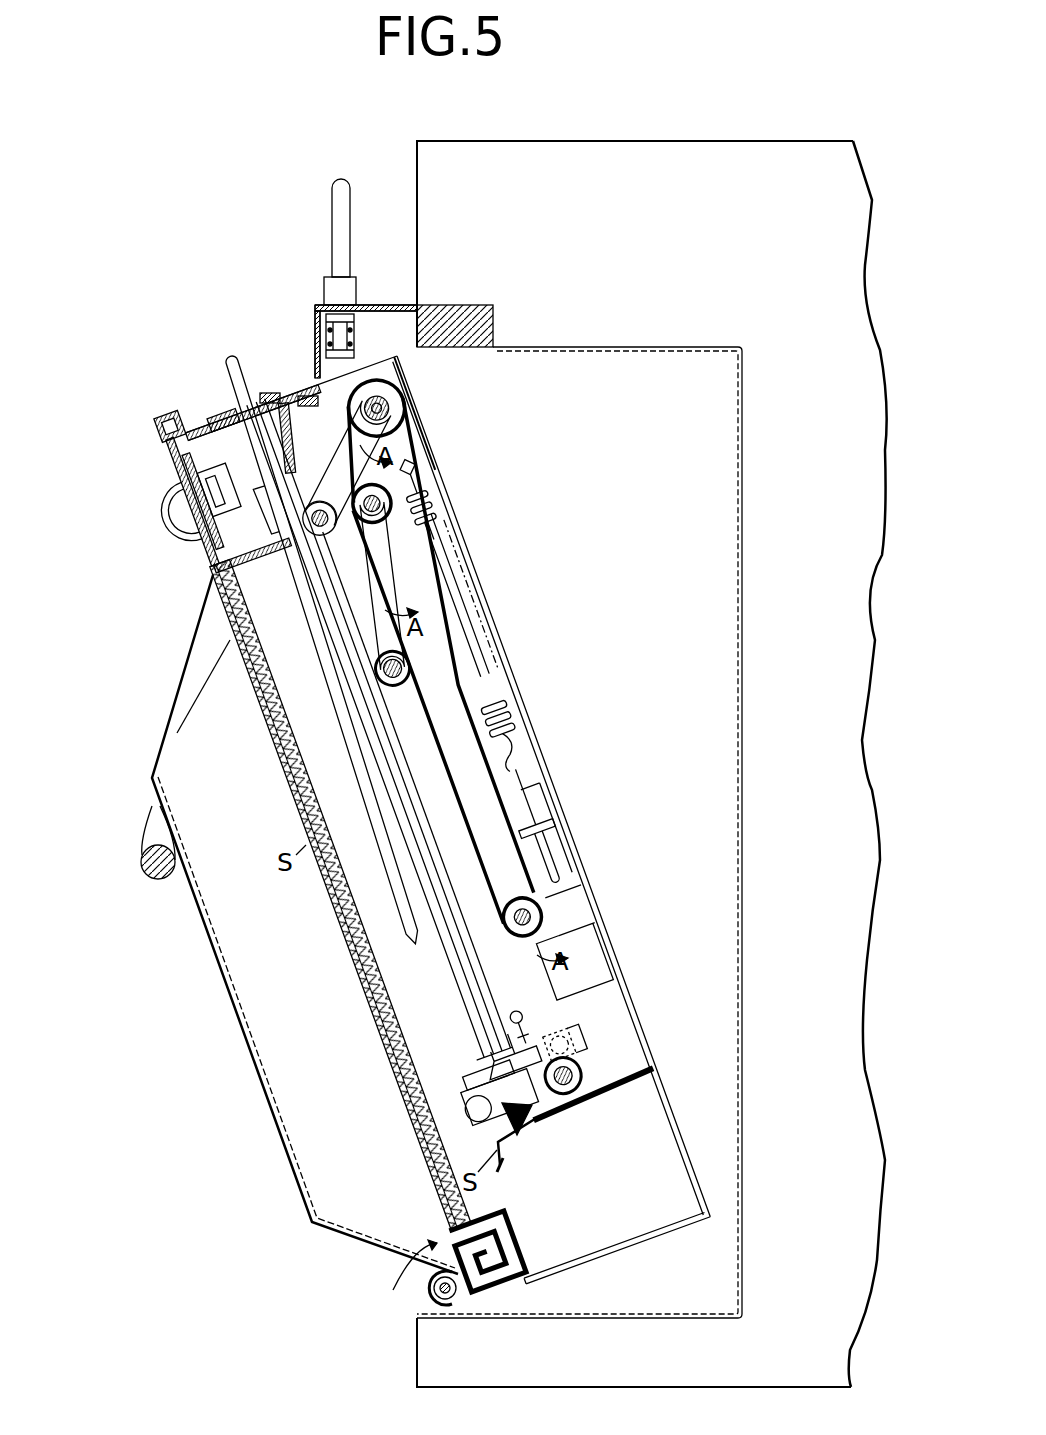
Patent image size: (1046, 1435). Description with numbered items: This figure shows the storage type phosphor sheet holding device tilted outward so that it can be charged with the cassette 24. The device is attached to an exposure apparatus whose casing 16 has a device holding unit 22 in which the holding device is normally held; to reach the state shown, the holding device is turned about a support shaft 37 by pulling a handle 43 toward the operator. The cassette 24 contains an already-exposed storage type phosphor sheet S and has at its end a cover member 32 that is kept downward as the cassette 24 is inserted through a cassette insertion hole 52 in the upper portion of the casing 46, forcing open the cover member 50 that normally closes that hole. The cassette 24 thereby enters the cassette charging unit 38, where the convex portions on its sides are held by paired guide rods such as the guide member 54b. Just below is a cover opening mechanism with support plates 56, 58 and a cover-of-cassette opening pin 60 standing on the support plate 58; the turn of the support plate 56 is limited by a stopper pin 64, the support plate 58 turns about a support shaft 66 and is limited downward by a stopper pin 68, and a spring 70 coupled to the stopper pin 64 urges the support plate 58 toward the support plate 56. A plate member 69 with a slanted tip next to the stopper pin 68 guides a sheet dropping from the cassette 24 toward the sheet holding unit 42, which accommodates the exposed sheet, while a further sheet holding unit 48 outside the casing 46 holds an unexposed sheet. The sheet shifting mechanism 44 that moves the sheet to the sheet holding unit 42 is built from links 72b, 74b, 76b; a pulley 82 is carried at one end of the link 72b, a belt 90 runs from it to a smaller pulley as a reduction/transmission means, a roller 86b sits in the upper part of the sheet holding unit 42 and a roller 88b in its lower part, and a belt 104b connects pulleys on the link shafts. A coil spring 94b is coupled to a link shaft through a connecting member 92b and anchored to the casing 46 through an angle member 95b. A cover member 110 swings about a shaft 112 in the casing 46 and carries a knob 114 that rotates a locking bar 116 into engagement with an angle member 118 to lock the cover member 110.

The casing 16 is at (604, 141).
The device holding unit 22 is at (645, 352).
The cassette 24 is at (243, 385).
The cover member 32 is at (490, 1048).
The support shaft 37 is at (450, 1300).
The cassette charging unit 38 is at (405, 713).
The sheet holding unit 42 is at (210, 566).
The handle 43 is at (150, 838).
The sheet shifting mechanism 44 is at (420, 455).
The casing 46 is at (467, 547).
The sheet holding unit 48 is at (262, 947).
The cover member 50 is at (288, 422).
The cassette insertion hole 52 is at (213, 405).
The guide member 54b is at (300, 520).
The support plate 56 is at (540, 1040).
The support plate 58 is at (527, 1128).
The cover-of-cassette opening pin 60 is at (480, 1087).
The stopper pin 64 is at (518, 1017).
The support shaft 66 is at (455, 1100).
The stopper pin 68 is at (540, 1117).
The plate member 69 is at (510, 1160).
The spring 70 is at (500, 1035).
The link 72b is at (410, 427).
The link 74b is at (385, 580).
The link 76b is at (548, 935).
The pulley 82 is at (390, 400).
The roller 86b is at (375, 667).
The roller 88b is at (603, 1090).
The belt 90 is at (418, 452).
The connecting member 92b is at (440, 490).
The coil spring 94b is at (490, 700).
The angle member 95b is at (550, 800).
The belt 104b is at (535, 850).
The cover member 110 is at (378, 1010).
The shaft 112 is at (490, 1290).
The knob 114 is at (178, 525).
The locking bar 116 is at (180, 485).
The angle member 118 is at (197, 427).